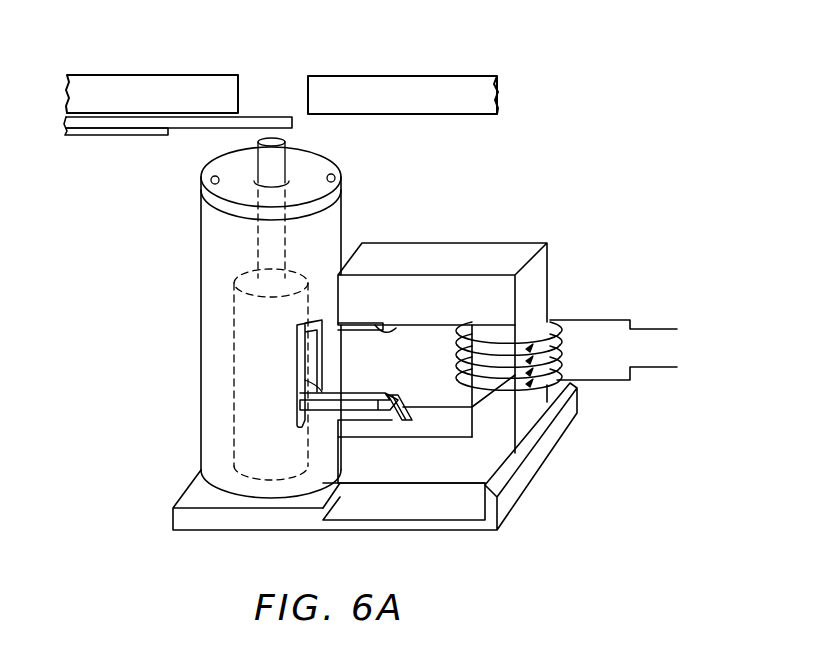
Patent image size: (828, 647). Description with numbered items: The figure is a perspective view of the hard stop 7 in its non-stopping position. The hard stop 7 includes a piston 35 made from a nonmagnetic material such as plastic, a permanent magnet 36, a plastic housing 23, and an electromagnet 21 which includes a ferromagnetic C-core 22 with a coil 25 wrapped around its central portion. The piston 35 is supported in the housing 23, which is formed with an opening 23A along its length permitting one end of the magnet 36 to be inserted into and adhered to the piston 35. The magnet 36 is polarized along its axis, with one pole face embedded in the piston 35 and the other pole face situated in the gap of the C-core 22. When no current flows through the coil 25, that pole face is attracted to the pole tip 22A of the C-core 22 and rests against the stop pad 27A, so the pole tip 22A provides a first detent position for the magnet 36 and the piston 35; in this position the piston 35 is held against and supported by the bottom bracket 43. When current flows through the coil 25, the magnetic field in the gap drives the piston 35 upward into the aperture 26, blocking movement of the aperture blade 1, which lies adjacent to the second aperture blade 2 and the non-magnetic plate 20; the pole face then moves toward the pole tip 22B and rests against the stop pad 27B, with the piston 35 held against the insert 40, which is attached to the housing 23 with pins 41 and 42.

The aperture blade 1 is at (207, 132).
The aperture blade 2 is at (100, 133).
The hard stop 7 is at (132, 327).
The non-magnetic plate 20 is at (186, 85).
The electromagnet 21 is at (557, 280).
The ferromagnetic C-core 22 is at (435, 377).
The pole tip 22A is at (358, 470).
The pole tip 22B is at (357, 295).
The plastic housing 23 is at (344, 223).
The opening 23A is at (320, 368).
The coil 25 is at (582, 313).
The aperture 26 is at (283, 88).
The stop pad 27A is at (382, 420).
The stop pad 27B is at (385, 325).
The piston 35 is at (288, 158).
The magnet 36 is at (322, 425).
The insert 40 is at (332, 162).
The pin 41 is at (344, 170).
The pin 42 is at (206, 200).
The bottom bracket 43 is at (215, 525).